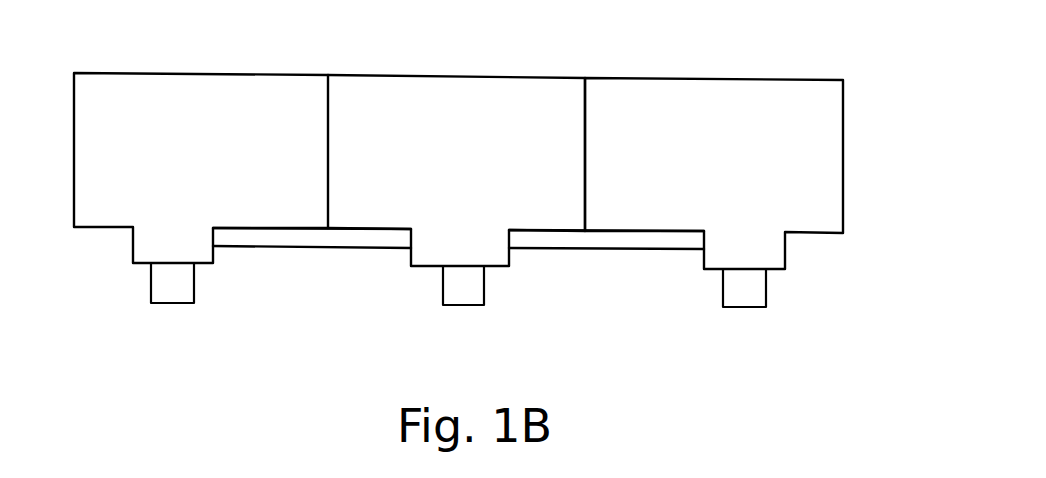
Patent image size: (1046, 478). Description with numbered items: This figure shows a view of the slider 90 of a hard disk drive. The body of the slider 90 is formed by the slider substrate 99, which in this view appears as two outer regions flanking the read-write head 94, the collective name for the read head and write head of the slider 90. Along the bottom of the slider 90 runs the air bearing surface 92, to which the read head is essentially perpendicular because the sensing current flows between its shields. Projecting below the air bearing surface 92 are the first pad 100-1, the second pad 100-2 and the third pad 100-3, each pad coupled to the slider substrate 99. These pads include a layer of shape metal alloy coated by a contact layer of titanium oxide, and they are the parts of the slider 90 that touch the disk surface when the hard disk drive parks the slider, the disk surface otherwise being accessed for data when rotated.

The slider 90 is at (843, 60).
The air bearing surface 92 is at (853, 232).
The read-write head 94 is at (456, 170).
The slider substrate 99 is at (458, 171).
The first pad 100-1 is at (466, 305).
The second pad 100-2 is at (183, 303).
The third pad 100-3 is at (748, 307).